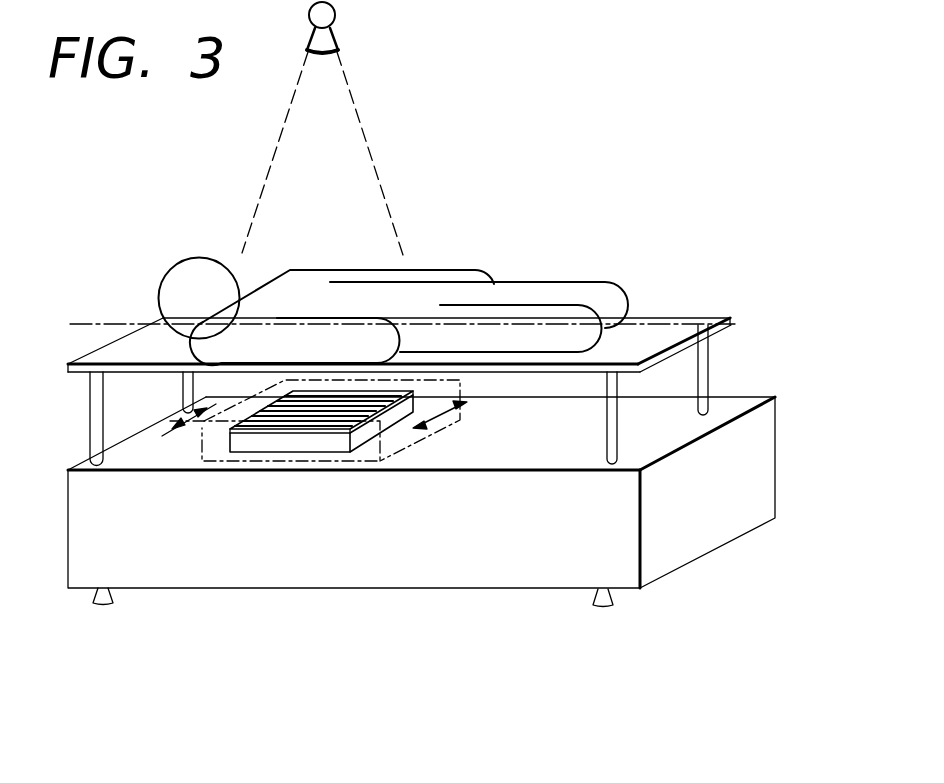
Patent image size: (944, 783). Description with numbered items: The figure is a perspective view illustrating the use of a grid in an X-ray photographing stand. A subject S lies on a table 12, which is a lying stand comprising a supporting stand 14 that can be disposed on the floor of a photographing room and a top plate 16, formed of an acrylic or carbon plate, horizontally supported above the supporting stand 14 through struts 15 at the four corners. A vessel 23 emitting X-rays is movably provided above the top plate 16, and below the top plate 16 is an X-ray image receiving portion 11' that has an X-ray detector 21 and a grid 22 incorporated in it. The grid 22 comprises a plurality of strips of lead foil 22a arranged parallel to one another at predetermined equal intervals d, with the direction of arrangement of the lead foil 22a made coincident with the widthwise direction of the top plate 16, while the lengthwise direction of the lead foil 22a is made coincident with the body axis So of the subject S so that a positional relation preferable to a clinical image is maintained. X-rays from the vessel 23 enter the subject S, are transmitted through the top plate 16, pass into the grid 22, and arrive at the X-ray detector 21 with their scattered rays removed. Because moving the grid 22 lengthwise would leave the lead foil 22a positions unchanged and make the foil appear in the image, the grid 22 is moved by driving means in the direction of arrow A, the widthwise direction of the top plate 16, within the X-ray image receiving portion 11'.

The vessel 23 is at (327, 13).
The subject S is at (548, 292).
The body axis So is at (100, 323).
The table 12 is at (424, 363).
The top plate 16 is at (660, 322).
The strut 15 is at (706, 366).
The supporting stand 14 is at (762, 440).
The X-ray image receiving portion 11' is at (315, 463).
The X-ray detector 21 is at (296, 445).
The grid 22 is at (310, 461).
The lead foil 22a is at (397, 492).
The interval d is at (180, 430).
The arrow A direction A is at (447, 414).